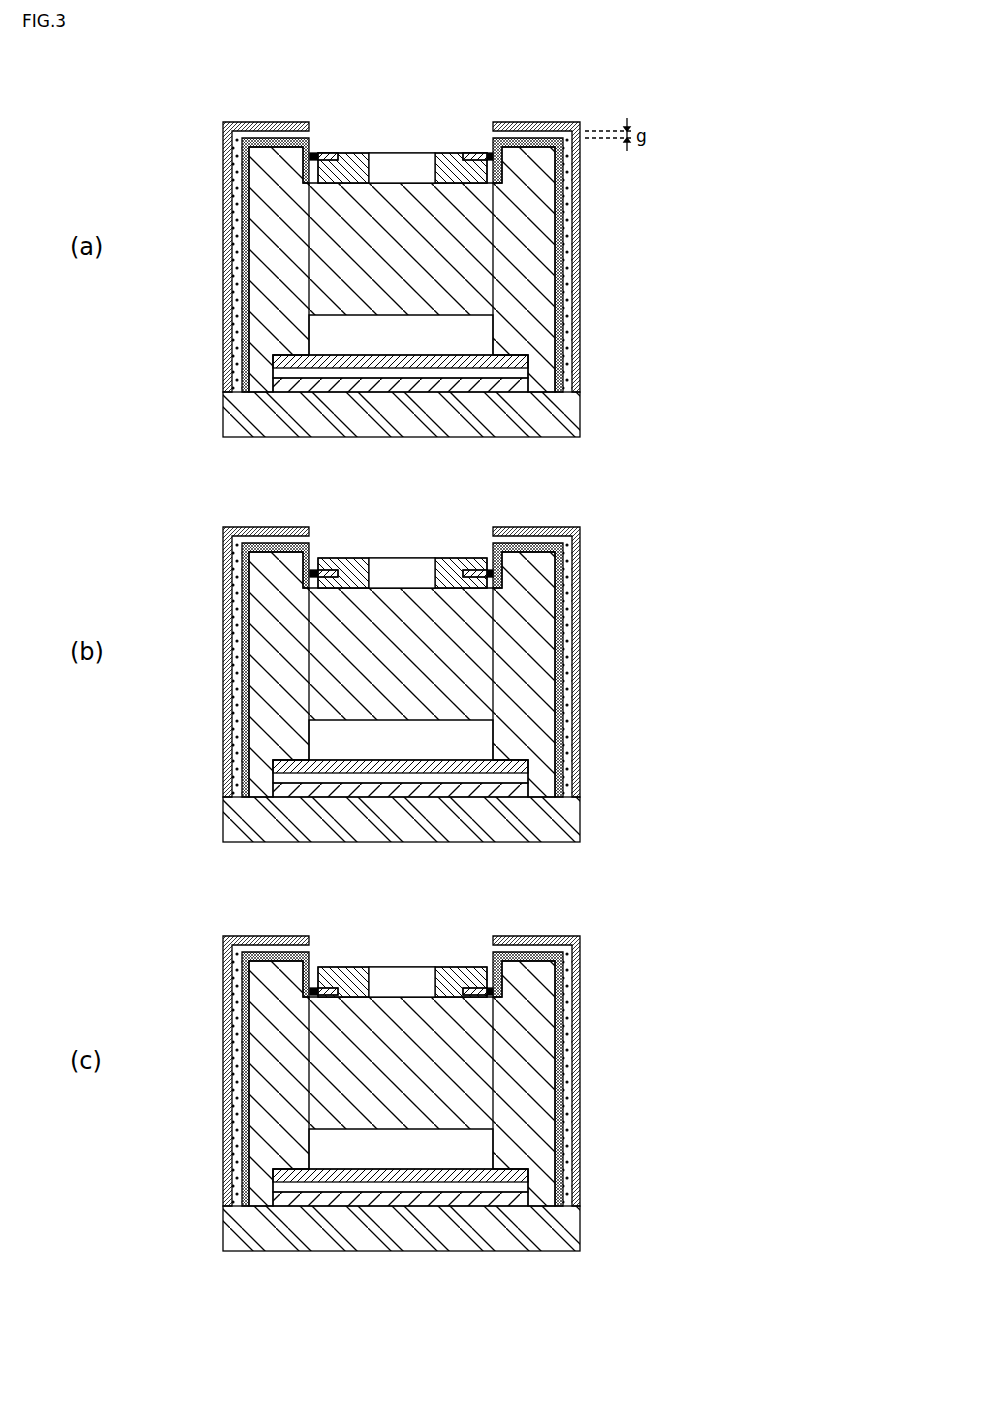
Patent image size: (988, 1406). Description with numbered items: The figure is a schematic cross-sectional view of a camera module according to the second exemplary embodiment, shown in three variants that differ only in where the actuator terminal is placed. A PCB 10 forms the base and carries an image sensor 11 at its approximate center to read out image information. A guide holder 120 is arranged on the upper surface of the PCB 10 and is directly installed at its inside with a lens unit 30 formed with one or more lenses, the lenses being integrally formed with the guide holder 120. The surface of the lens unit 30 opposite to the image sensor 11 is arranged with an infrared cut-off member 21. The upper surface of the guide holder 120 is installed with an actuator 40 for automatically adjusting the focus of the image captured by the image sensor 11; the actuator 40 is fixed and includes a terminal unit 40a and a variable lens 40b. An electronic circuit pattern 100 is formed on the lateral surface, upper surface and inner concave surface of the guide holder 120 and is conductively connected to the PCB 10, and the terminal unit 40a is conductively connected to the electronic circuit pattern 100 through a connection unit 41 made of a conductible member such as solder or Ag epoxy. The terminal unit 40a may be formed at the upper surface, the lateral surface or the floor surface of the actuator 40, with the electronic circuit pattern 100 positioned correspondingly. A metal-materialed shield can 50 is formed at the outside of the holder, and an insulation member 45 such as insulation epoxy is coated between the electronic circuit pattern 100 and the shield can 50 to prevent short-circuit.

The PCB 10 is at (573, 417).
The image sensor 11 is at (512, 385).
The infrared cut-off member 21 is at (517, 350).
The lens unit 30 is at (477, 240).
The actuator 40 is at (418, 93).
The terminal unit 40a is at (335, 157).
The variable lens 40b is at (407, 162).
The connection unit 41 is at (487, 156).
The insulation member 45 is at (235, 202).
The shield can 50 is at (537, 122).
The electronic circuit pattern 100 is at (238, 262).
The guide holder 120 is at (255, 366).